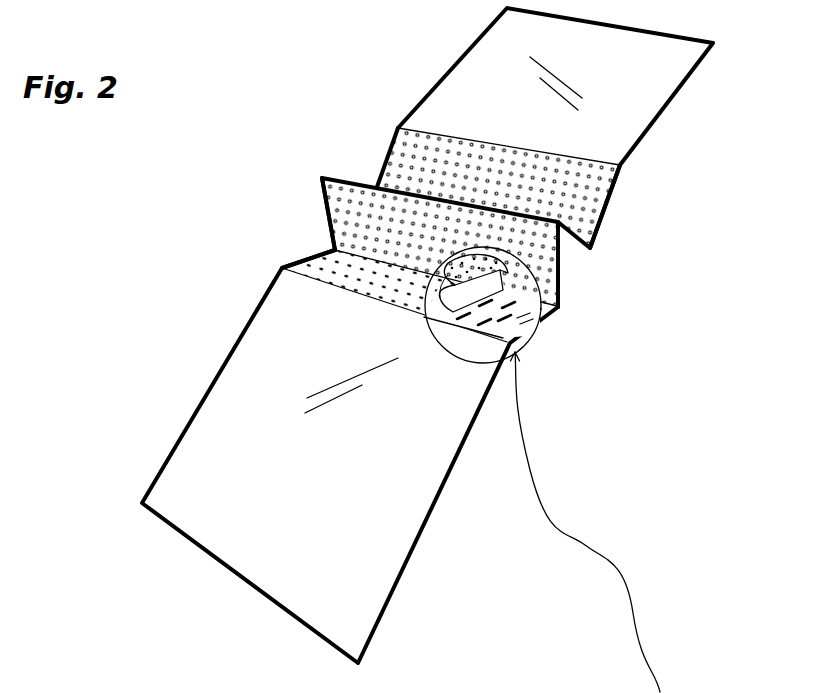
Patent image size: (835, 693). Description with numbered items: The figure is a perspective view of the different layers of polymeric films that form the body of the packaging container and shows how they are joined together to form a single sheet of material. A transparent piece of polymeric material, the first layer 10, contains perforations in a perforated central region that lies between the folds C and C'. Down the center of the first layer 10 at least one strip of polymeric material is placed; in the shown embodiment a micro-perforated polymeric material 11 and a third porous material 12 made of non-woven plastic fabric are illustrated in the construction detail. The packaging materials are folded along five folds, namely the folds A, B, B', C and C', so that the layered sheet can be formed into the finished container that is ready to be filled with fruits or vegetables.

The first layer 10 is at (632, 63).
The micro-perforated polymeric material 11 is at (377, 237).
The third porous material 12 is at (559, 310).
The fold A is at (313, 175).
The fold B is at (651, 273).
The fold B' is at (679, 201).
The fold C is at (199, 247).
The fold C' is at (357, 111).